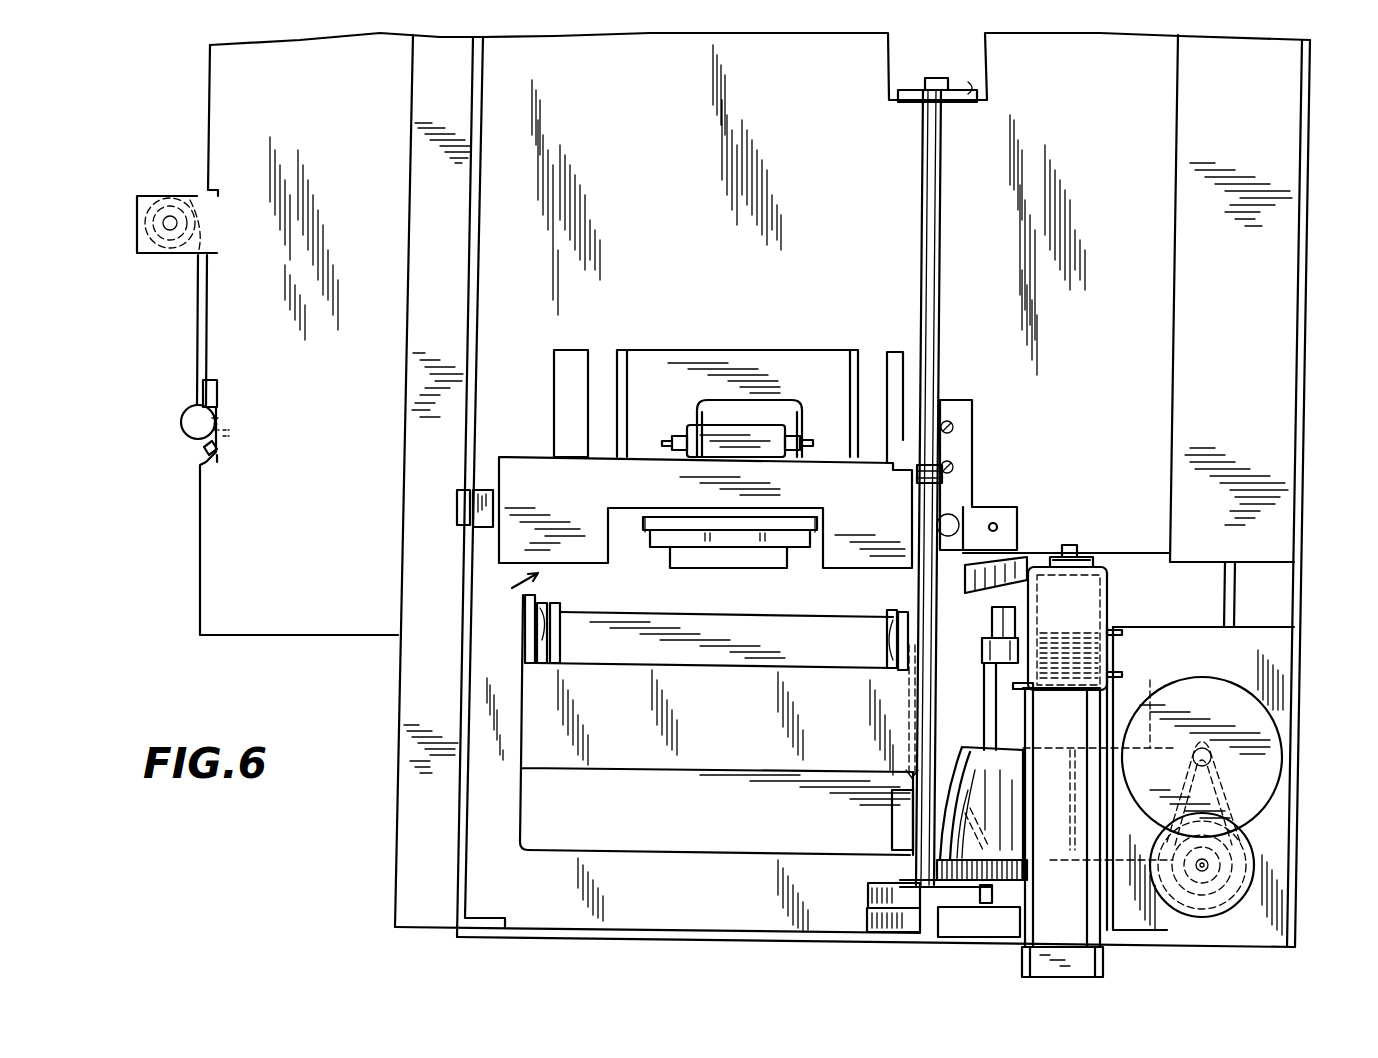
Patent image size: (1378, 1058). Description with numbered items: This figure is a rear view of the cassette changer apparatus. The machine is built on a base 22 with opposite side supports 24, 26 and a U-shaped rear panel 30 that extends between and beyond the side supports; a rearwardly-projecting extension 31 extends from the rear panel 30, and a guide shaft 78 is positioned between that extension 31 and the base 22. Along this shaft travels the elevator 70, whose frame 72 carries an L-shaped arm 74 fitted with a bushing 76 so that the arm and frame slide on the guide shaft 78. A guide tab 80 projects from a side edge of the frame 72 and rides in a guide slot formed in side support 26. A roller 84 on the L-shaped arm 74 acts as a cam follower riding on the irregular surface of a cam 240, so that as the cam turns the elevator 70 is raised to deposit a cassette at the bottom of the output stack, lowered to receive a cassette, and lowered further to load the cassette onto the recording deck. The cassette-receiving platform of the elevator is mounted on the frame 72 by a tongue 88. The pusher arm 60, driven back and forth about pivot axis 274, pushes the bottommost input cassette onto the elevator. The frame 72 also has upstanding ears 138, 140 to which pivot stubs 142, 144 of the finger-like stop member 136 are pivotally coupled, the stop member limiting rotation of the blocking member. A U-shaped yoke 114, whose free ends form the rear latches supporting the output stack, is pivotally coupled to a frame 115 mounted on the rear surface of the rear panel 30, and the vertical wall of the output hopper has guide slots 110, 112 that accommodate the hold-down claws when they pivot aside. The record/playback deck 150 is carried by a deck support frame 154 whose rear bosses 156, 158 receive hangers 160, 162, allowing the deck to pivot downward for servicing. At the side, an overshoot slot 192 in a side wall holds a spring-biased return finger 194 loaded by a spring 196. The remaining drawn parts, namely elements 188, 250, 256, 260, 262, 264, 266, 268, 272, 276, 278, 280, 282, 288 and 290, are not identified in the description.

The base 22 is at (632, 931).
The side support 24 is at (1303, 378).
The side support 26 is at (472, 256).
The U-shaped rear panel 30 is at (217, 580).
The rearwardly-projecting extension 31 is at (973, 90).
The pusher arm 60 is at (1017, 562).
The elevator 70 is at (500, 604).
The frame 72 is at (523, 443).
The L-shaped arm 74 is at (937, 639).
The bushing 76 is at (915, 477).
The guide shaft 78 is at (938, 298).
The guide tab 80 is at (461, 495).
The roller 84 is at (966, 830).
The tongue 88 is at (695, 558).
The guide slot 110 is at (562, 383).
The guide slot 112 is at (900, 358).
The U-shaped yoke 114 is at (690, 517).
The frame 115 is at (632, 355).
The stop member 136 is at (742, 425).
The upstanding ear 138 is at (680, 430).
The upstanding ear 140 is at (800, 427).
The pivot stub 142 is at (667, 441).
The pivot stub 144 is at (810, 445).
The record/playback deck 150 is at (635, 622).
The deck support frame 154 is at (733, 718).
The boss 156 is at (562, 635).
The boss 158 is at (903, 613).
The hanger 160 is at (562, 622).
The hanger 162 is at (885, 628).
The latch 188 is at (203, 455).
The overshoot slot 192 is at (217, 465).
The return finger 194 is at (181, 424).
The spring 196 is at (170, 251).
The cam 240 is at (967, 753).
The drive motor 250 is at (1022, 963).
The cam 256 is at (1213, 730).
The gear 260 is at (1230, 900).
The cam lobe 262 is at (1212, 796).
The rack 264 is at (1010, 849).
The coupling 266 is at (987, 655).
The link rod 268 is at (990, 665).
The plunger 272 is at (992, 619).
The pivot axis 274 is at (1070, 545).
The support arm 276 is at (1027, 782).
The support post 278 is at (1050, 694).
The solenoid 280 is at (1067, 628).
The solenoid cap 282 is at (1080, 557).
The screw 288 is at (997, 525).
The stop block 290 is at (955, 912).